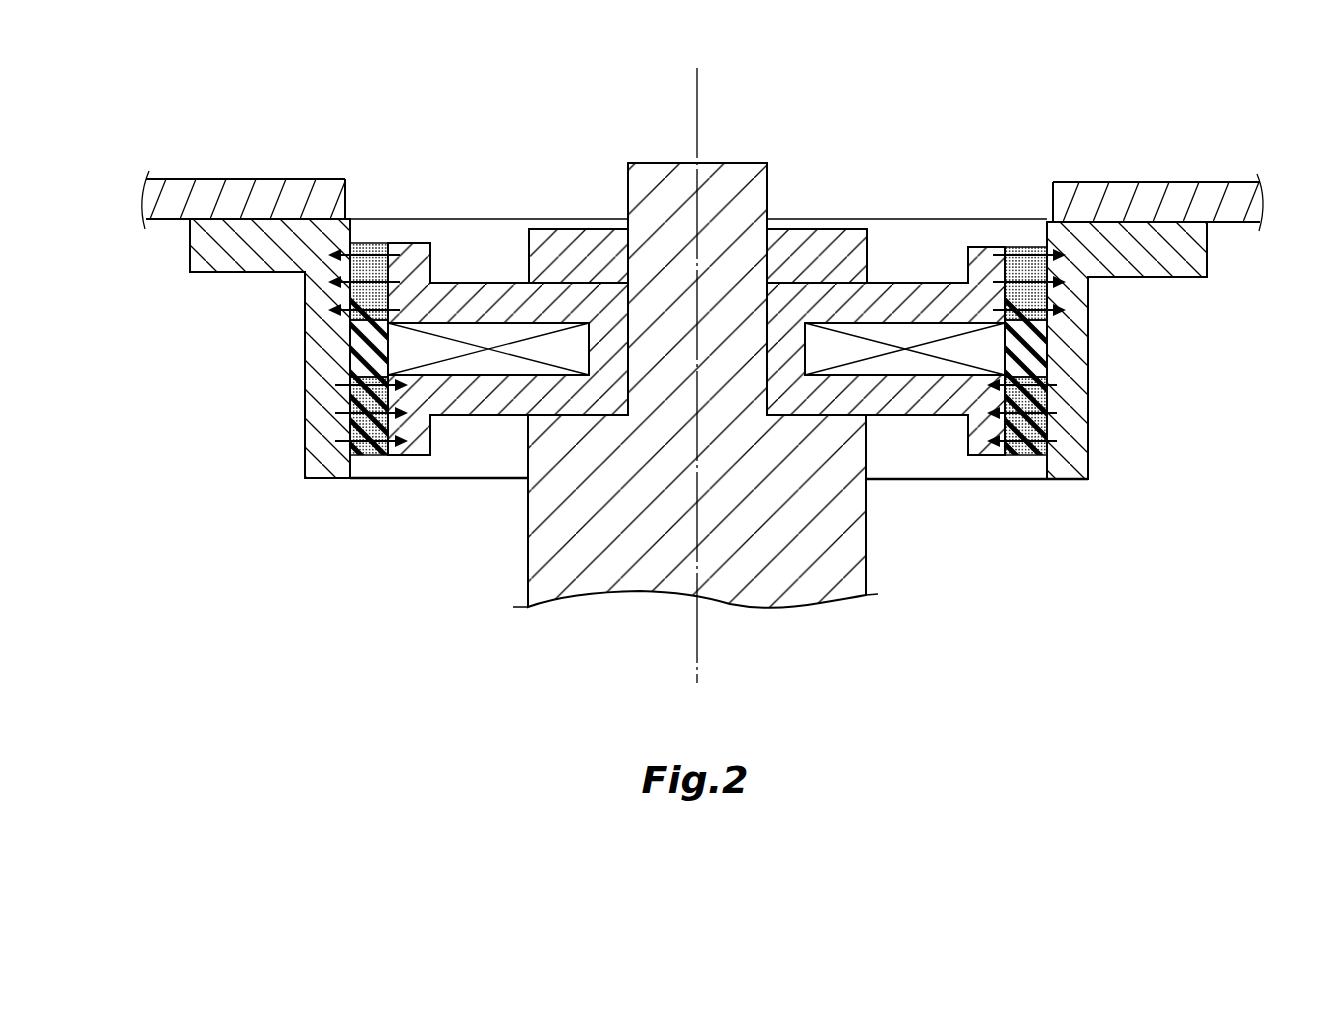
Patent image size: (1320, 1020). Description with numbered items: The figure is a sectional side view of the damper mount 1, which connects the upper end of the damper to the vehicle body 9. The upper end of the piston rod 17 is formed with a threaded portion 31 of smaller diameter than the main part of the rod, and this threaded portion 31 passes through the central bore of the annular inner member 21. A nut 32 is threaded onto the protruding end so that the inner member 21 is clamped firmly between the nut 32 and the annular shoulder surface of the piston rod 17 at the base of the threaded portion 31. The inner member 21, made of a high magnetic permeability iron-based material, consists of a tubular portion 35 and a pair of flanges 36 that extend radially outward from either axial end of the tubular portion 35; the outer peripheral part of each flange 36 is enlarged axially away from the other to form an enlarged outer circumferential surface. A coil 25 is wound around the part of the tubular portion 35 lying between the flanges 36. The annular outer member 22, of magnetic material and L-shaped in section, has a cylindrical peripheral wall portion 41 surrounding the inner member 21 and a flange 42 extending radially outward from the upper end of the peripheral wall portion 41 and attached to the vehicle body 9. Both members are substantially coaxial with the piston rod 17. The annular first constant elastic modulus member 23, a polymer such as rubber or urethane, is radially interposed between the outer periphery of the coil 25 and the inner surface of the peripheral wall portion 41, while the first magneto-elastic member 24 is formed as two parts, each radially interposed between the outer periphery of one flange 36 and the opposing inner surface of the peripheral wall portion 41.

The damper mount 1 is at (386, 124).
The vehicle body 9 is at (1198, 182).
The piston rod 17 is at (526, 560).
The inner member 21 is at (839, 283).
The outer member 22 is at (1117, 221).
The first constant elastic modulus member 23 is at (1048, 352).
The first magneto-elastic member 24 is at (1052, 302).
The coil 25 is at (885, 322).
The threaded portion 31 is at (651, 162).
The nut 32 is at (568, 228).
The tubular portion 35 is at (762, 308).
The flange 36 is at (937, 286).
The peripheral wall portion 41 is at (1088, 402).
The flange 42 is at (1163, 278).